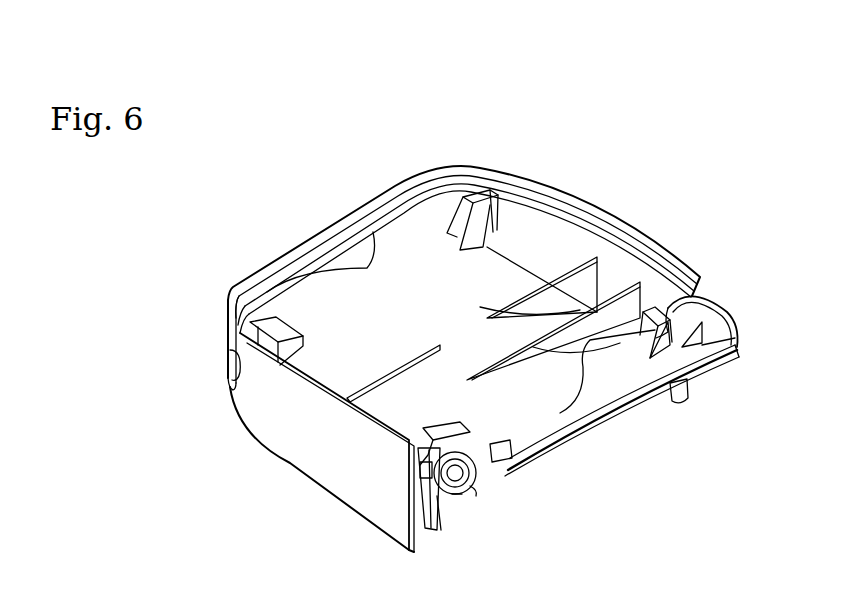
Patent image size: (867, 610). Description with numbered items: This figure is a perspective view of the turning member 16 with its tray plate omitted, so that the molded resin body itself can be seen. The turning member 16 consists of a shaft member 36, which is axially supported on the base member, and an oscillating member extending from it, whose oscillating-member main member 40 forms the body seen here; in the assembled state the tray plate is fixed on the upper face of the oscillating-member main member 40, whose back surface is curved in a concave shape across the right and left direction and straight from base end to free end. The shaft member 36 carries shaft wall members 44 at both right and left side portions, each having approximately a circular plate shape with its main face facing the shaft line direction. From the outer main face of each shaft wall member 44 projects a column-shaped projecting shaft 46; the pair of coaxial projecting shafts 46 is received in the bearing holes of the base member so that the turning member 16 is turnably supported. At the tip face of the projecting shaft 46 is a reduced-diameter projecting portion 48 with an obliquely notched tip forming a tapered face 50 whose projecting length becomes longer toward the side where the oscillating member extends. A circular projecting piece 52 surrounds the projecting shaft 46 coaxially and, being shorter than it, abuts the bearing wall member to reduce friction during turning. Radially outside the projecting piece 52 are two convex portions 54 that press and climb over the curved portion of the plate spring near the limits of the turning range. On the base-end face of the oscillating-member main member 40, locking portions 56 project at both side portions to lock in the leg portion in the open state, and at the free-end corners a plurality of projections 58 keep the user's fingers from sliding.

The turning member 16 is at (598, 153).
The shaft member 36 is at (498, 489).
The oscillating-member main member 40 is at (413, 178).
The shaft wall member 44 is at (713, 313).
The projecting shaft 46 is at (477, 493).
The projecting portion 48 is at (409, 518).
The tapered face 50 is at (457, 497).
The projecting piece 52 is at (425, 468).
The convex portion 54 is at (512, 470).
The locking portion 56 is at (437, 530).
The projection 58 is at (227, 362).